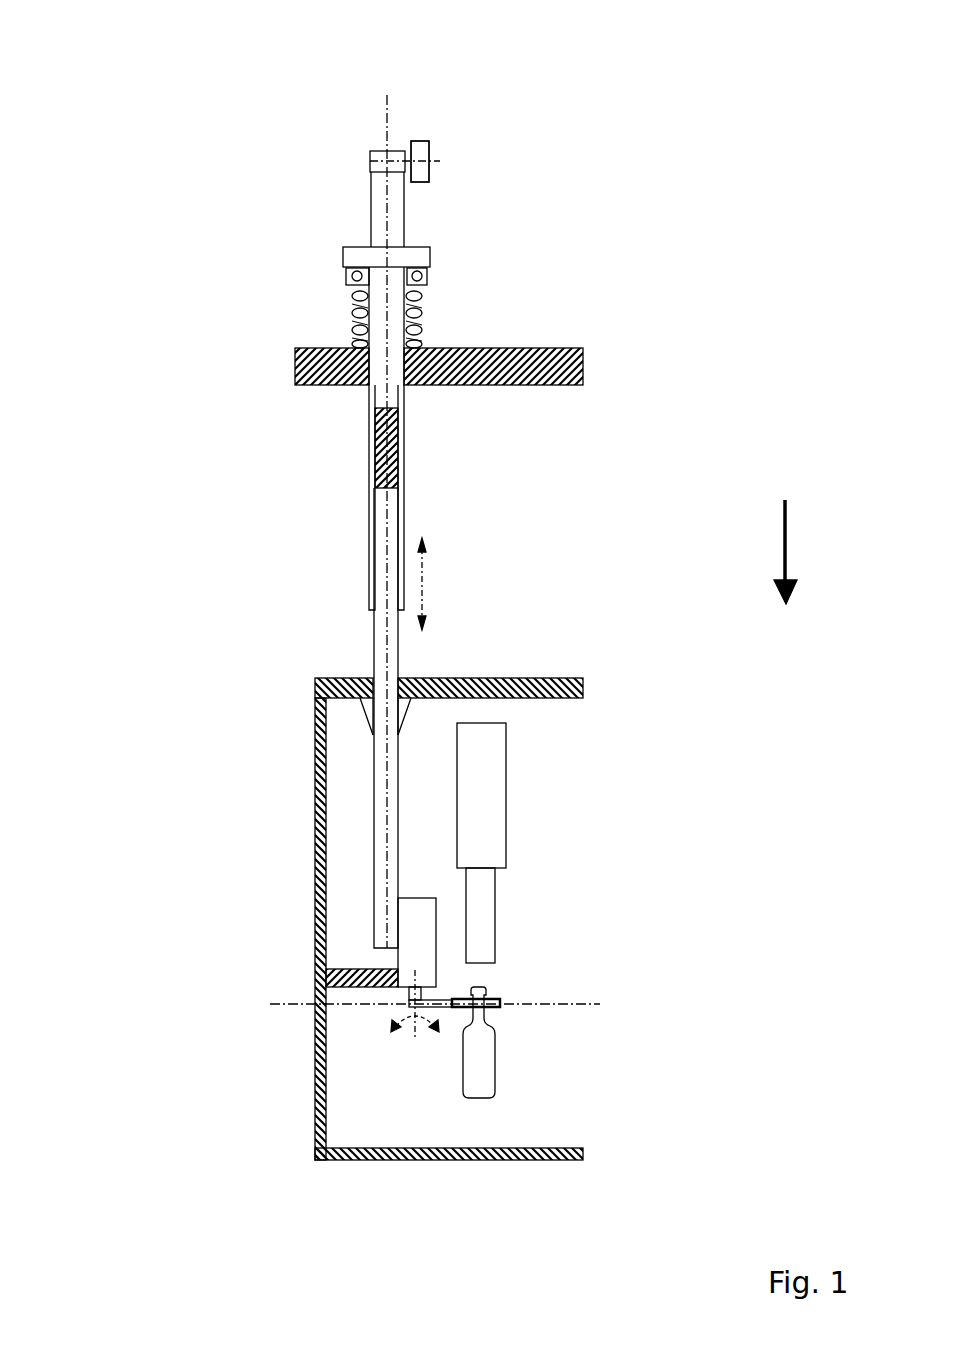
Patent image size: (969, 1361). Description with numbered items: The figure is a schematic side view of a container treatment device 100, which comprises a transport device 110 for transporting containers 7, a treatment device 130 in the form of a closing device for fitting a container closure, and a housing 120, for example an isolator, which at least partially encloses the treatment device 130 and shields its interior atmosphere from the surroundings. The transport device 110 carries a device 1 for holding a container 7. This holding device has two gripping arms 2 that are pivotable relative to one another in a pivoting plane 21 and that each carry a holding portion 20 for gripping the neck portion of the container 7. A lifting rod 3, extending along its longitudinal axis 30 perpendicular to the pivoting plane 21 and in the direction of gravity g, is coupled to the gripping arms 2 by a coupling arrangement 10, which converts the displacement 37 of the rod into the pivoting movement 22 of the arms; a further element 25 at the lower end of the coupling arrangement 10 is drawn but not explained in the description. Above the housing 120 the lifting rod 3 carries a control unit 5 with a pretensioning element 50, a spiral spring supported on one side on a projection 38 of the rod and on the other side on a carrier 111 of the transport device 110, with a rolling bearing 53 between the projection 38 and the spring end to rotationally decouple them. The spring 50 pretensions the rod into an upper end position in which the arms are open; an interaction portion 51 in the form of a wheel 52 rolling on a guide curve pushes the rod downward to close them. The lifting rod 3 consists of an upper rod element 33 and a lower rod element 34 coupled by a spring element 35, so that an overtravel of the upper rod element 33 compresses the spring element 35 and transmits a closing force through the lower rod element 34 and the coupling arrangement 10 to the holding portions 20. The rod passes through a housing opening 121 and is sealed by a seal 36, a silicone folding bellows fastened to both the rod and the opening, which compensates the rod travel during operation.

The container treatment device 100 is at (185, 102).
The device for holding a container 1 is at (220, 264).
The control unit 5 is at (292, 115).
The longitudinal axis 30 is at (382, 115).
The interaction portion 51 is at (421, 152).
The wheel 52 is at (420, 161).
The projection 38 is at (413, 257).
The rolling bearing 53 is at (427, 277).
The pretensioning element 50 is at (358, 313).
The transport device 110 is at (688, 251).
The carrier 111 is at (582, 363).
The upper rod element 33 is at (395, 398).
The spring element 35 is at (405, 438).
The lifting rod 3 is at (300, 502).
The lower rod element 34 is at (382, 627).
The displacement of the lifting rod 37 is at (422, 582).
The direction of gravity g is at (782, 537).
The housing opening 121 is at (367, 680).
The housing 120 is at (583, 687).
The seal 36 is at (362, 703).
The coupling arrangement 10 is at (420, 918).
The treatment device 130 is at (479, 918).
The pivoting plane 21 is at (287, 1003).
The holding portion 20 is at (496, 986).
The pivoting movement 22 is at (388, 1022).
The filling nozzle 25 is at (415, 1033).
The gripping arms 2 is at (450, 1005).
The container 7 is at (490, 1068).